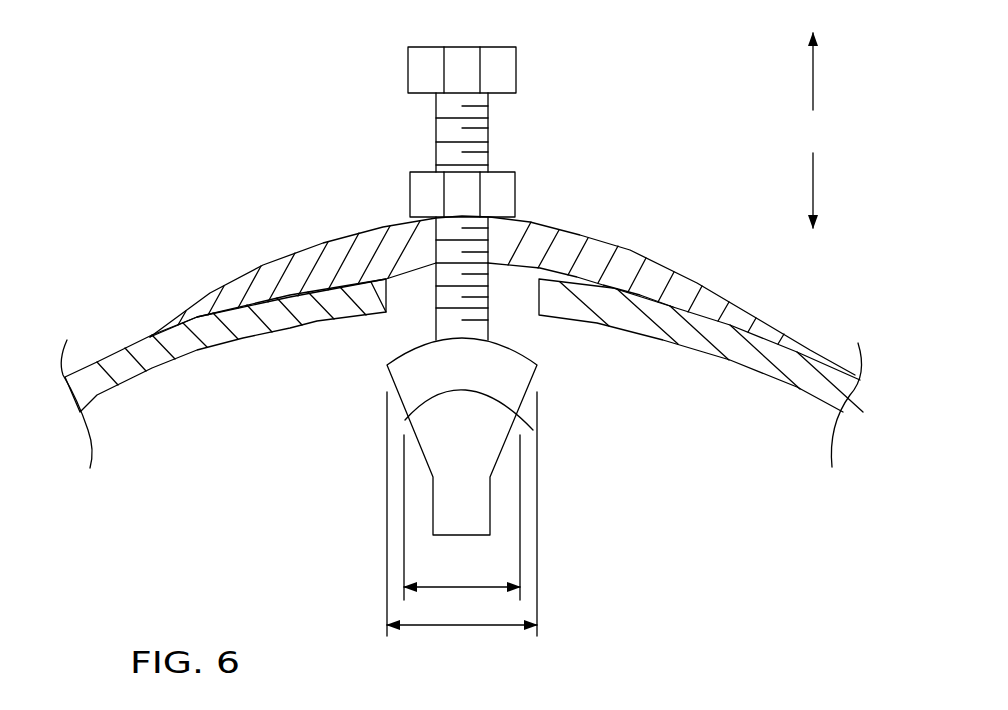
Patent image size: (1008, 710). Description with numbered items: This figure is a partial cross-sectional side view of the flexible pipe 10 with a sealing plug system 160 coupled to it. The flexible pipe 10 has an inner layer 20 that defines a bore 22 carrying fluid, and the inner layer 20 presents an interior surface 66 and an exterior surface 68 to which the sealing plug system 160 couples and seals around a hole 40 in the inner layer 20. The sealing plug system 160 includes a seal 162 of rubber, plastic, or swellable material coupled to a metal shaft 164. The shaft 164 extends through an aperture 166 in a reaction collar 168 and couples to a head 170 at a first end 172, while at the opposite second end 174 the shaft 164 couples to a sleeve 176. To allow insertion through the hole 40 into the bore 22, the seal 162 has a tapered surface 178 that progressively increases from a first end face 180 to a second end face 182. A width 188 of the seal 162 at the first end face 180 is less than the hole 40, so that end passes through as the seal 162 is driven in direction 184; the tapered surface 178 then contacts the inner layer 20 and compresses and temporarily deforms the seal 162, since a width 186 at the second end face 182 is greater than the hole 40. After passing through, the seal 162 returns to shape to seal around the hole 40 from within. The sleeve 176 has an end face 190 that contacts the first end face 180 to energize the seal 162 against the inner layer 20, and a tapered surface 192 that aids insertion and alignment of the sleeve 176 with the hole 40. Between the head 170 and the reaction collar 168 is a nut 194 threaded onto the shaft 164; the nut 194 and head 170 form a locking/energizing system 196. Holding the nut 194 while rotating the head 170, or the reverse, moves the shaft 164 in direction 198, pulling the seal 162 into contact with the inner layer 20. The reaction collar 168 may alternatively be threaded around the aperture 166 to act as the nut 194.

The flexible pipe 10 is at (768, 518).
The inner layer 20 is at (115, 362).
The bore 22 is at (747, 466).
The hole 40 is at (317, 288).
The interior surface 66 is at (148, 375).
The exterior surface 68 is at (825, 357).
The sealing plug system 160 is at (707, 170).
The seal 162 is at (327, 380).
The shaft 164 is at (480, 140).
The aperture 166 is at (433, 231).
The reaction collar 168 is at (693, 290).
The head 170 is at (417, 70).
The first end 172 is at (519, 45).
The second end 174 is at (472, 637).
The sleeve 176 is at (505, 450).
The tapered surface 178 is at (385, 367).
The first end face 180 is at (460, 392).
The second end face 182 is at (537, 362).
The direction 184 is at (813, 183).
The width 186 is at (430, 625).
The width 188 is at (462, 587).
The end face 190 is at (428, 402).
The tapered surface 192 is at (533, 430).
The nut 194 is at (500, 200).
The locking/energizing system 196 is at (238, 250).
The direction 198 is at (813, 78).